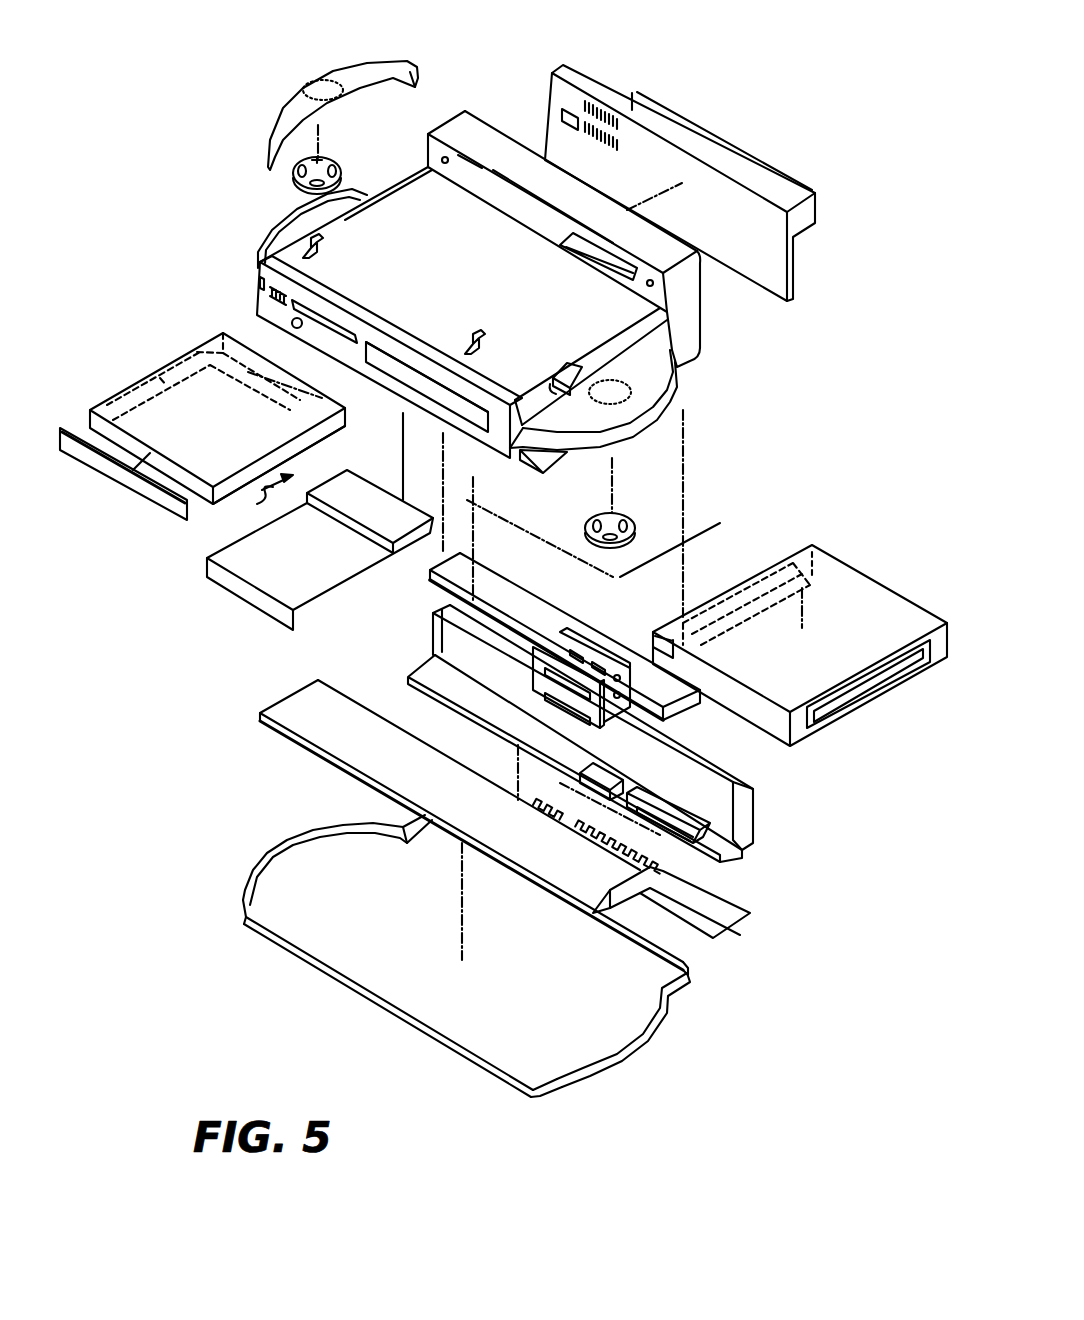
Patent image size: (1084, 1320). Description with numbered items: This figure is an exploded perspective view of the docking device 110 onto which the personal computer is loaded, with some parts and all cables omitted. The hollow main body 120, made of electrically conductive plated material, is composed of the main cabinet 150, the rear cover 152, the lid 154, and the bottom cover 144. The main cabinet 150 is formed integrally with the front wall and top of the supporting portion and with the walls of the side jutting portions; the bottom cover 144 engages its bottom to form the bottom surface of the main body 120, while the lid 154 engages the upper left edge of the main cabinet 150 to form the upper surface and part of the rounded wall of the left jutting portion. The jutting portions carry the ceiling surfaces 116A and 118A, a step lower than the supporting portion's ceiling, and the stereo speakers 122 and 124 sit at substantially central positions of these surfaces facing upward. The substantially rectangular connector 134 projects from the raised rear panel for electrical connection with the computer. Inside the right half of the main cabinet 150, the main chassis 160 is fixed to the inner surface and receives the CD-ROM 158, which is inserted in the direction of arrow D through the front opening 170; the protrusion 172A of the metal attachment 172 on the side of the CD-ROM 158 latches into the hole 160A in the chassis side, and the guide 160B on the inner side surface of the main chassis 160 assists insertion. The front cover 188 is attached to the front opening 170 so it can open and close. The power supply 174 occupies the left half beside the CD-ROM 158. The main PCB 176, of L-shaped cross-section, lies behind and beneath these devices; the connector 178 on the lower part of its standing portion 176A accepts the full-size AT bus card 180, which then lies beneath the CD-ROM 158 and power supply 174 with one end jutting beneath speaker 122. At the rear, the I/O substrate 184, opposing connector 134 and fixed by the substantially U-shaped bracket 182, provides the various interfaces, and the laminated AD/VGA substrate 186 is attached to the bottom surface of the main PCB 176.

The docking device 110 is at (764, 147).
The ceiling surface 116A is at (280, 113).
The ceiling surface 118A is at (672, 378).
The main body 120 is at (488, 104).
The stereo speaker 122 is at (297, 175).
The stereo speaker 124 is at (611, 517).
The connector 134 is at (610, 265).
The bottom cover 144 is at (357, 953).
The main cabinet 150 is at (262, 240).
The rear cover 152 is at (793, 262).
The lid 154 is at (376, 60).
The CD-ROM 158 is at (230, 488).
The main chassis 160 is at (850, 560).
The hole 160A is at (735, 592).
The guide 160B is at (680, 650).
The front opening 170 is at (433, 403).
The metal attachment 172 is at (125, 383).
The protrusion 172A is at (210, 308).
The power supply 174 is at (253, 600).
The main PCB 176 is at (753, 817).
The standing portion 176A is at (730, 775).
The connector 178 is at (713, 840).
The full-size AT bus card 180 is at (300, 738).
The bracket 182 is at (587, 643).
The I/O substrate 184 is at (528, 660).
The laminated AD/VGA substrate 186 is at (733, 920).
The front cover 188 is at (153, 503).